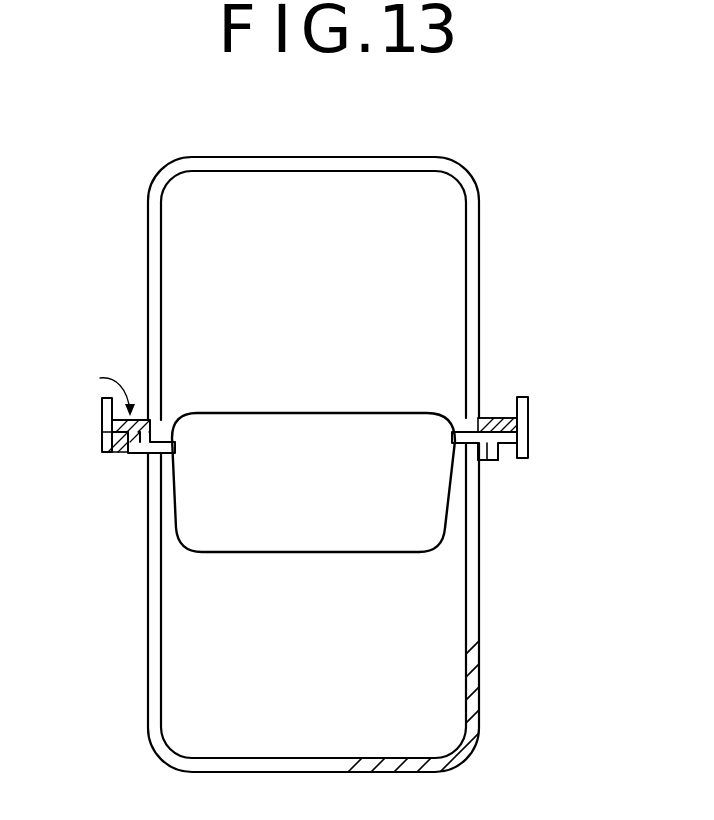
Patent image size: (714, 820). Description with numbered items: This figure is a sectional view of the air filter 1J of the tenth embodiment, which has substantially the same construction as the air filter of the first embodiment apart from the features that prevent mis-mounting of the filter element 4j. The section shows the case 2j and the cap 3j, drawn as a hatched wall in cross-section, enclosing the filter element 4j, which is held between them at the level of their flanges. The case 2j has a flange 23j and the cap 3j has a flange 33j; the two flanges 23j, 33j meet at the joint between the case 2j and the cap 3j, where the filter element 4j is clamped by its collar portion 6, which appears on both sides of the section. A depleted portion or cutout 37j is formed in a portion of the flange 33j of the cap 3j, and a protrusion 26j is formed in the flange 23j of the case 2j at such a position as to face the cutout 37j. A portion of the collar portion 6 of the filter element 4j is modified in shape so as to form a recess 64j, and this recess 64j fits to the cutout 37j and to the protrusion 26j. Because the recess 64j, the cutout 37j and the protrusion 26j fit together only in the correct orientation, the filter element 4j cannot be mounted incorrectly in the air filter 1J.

The air filter 1J is at (132, 213).
The case 2j is at (146, 653).
The cap 3j is at (146, 310).
The filter element 4j is at (321, 410).
The collar portion 6 is at (108, 439).
The flange 23j is at (119, 468).
The protrusion 26j is at (482, 459).
The flange 33j is at (506, 410).
The cutout 37j is at (486, 419).
The recess 64j is at (493, 460).